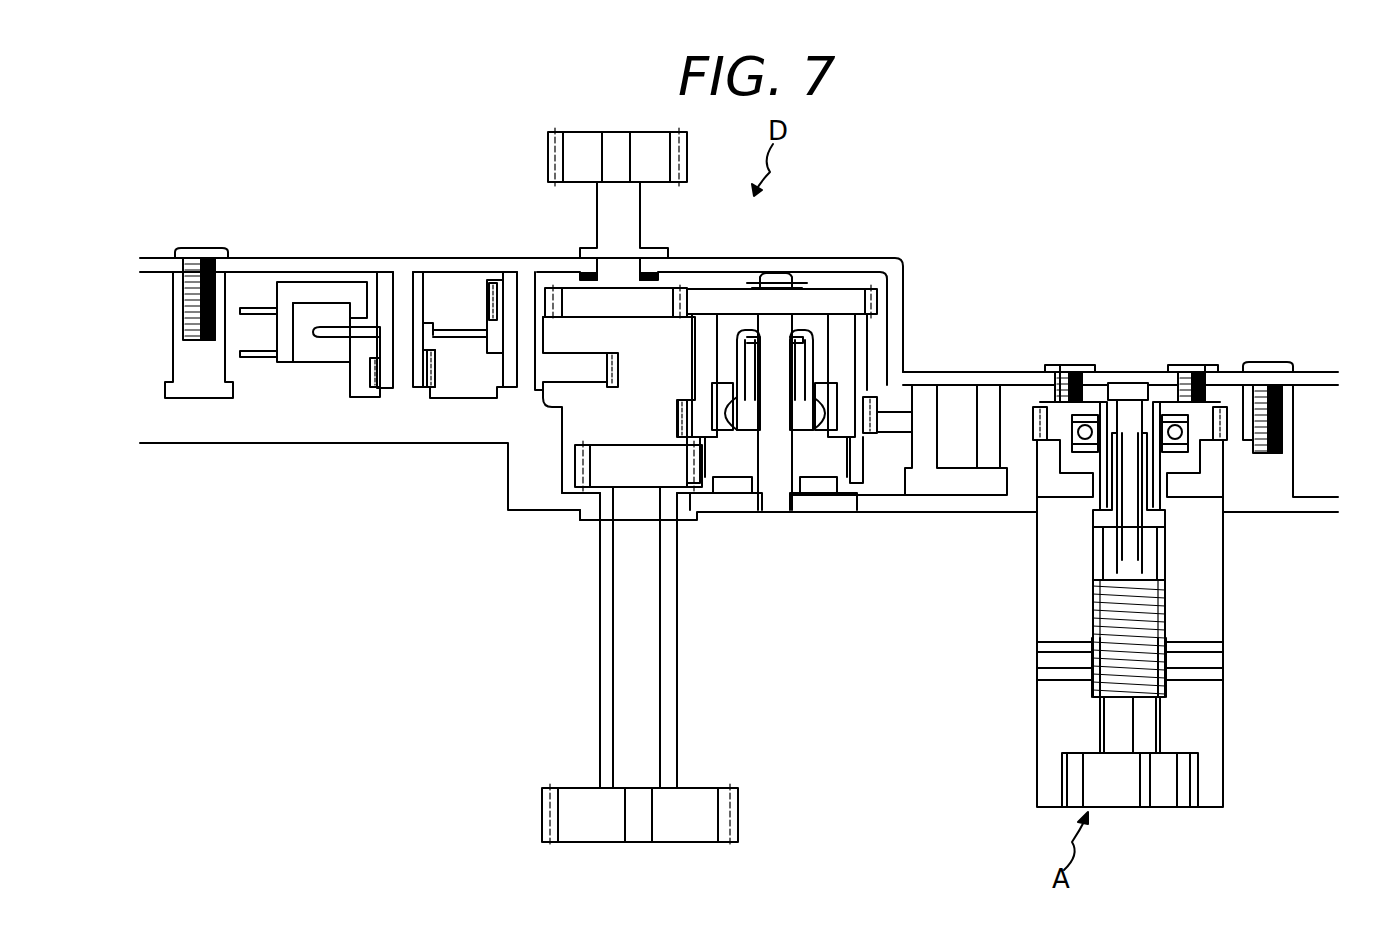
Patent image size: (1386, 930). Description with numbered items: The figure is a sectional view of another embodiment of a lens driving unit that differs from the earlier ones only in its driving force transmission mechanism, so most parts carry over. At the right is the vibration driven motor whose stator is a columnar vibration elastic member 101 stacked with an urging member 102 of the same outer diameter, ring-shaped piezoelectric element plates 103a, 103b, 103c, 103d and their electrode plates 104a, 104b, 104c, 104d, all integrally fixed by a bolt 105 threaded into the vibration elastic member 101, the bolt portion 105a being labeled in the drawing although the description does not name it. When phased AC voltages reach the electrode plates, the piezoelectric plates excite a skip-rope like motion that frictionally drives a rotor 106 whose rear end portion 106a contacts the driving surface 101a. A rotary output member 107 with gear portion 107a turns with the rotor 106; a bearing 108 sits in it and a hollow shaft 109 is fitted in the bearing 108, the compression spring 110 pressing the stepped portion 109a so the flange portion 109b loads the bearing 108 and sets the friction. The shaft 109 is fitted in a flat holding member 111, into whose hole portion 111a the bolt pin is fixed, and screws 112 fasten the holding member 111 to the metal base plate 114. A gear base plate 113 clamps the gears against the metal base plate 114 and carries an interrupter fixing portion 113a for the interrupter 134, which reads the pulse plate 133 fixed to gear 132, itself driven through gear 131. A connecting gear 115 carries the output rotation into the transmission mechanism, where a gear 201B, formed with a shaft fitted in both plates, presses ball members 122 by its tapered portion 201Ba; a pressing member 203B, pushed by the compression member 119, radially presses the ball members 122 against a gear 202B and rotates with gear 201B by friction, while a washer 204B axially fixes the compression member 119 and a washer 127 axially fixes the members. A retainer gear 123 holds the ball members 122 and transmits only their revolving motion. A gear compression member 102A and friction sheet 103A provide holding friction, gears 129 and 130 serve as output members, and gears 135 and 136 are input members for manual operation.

The vibration elastic member 101 is at (1047, 617).
The driving surface 101a is at (1187, 520).
The urging member 102 is at (1043, 745).
The gear compression member 102A is at (807, 490).
The friction sheet 103A is at (842, 480).
The piezoelectric element plate 103a is at (1037, 643).
The piezoelectric element plate 103b is at (1037, 652).
The piezoelectric element plate 103c is at (1037, 668).
The piezoelectric element plate 103d is at (1037, 680).
The electrode plate 104a is at (1226, 643).
The electrode plate 104b is at (1226, 652).
The electrode plate 104c is at (1226, 668).
The electrode plate 104d is at (1226, 680).
The bolt 105 is at (1148, 795).
The screw shaft 105a is at (1130, 470).
The rotor 106 is at (1040, 463).
The rear end portion 106a is at (1053, 523).
The rotary output member 107 is at (1060, 405).
The gear portion 107a is at (1055, 412).
The bearing 108 is at (1182, 436).
The hollow shaft 109 is at (1167, 520).
The stepped portion 109a is at (1097, 527).
The flange portion 109b is at (1190, 385).
The compression spring 110 is at (1138, 400).
The holding member 111 is at (1092, 345).
The hole portion 111a is at (1150, 415).
The screw 112 is at (1072, 372).
The gear base plate 113 is at (973, 498).
The interrupter fixing portion 113a is at (325, 293).
The metal base plate 114 is at (923, 380).
The connecting gear 115 is at (923, 462).
The compression member 119 is at (747, 327).
The ball members 122 is at (748, 413).
The retainer gear 123 is at (818, 297).
The washer 127 is at (798, 330).
The gear 129 is at (573, 295).
The gear 130 is at (568, 160).
The gear 131 is at (500, 300).
The gear 132 is at (377, 327).
The pulse plate 133 is at (357, 333).
The interrupter 134 is at (303, 307).
The gear 135 is at (603, 470).
The gear 136 is at (570, 813).
The gear 201B is at (843, 470).
The tapered portion 201Ba is at (747, 430).
The gear 202B is at (847, 410).
The pressing member 203B is at (855, 400).
The washer 204B is at (803, 367).